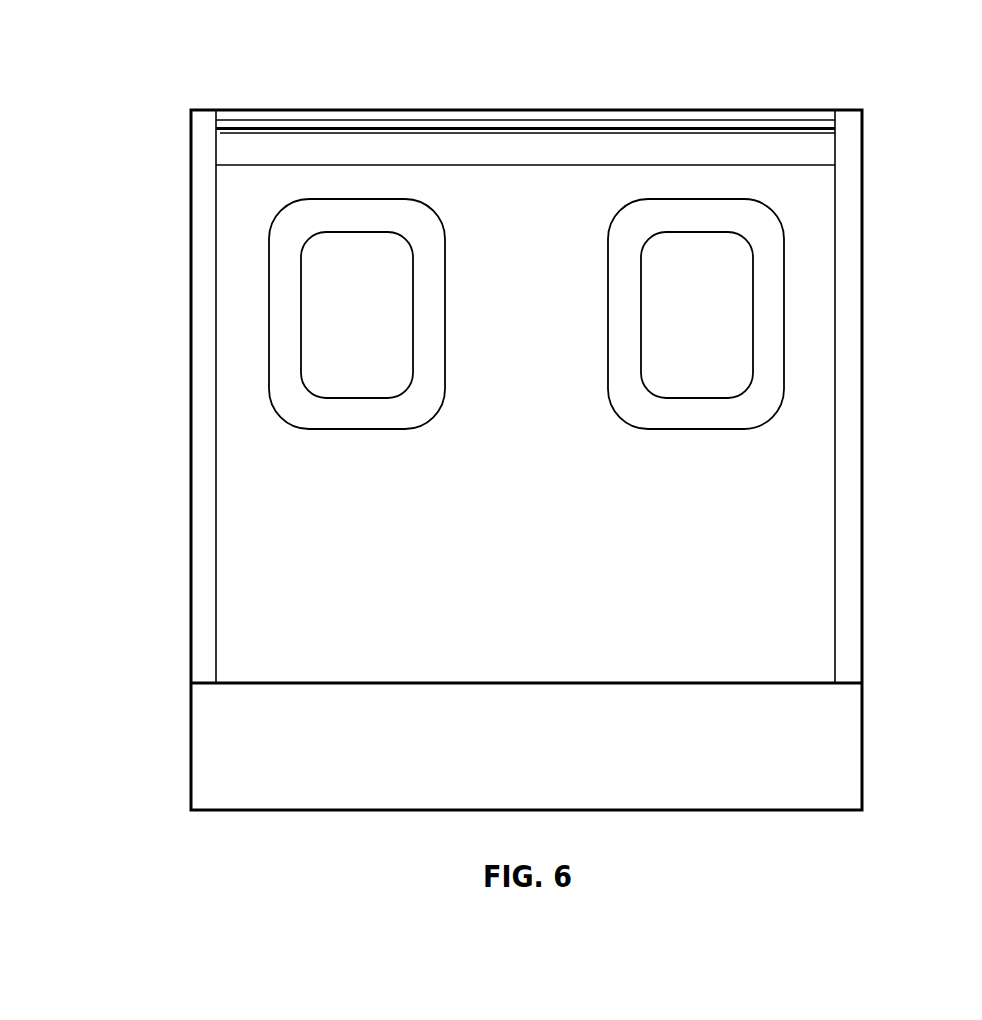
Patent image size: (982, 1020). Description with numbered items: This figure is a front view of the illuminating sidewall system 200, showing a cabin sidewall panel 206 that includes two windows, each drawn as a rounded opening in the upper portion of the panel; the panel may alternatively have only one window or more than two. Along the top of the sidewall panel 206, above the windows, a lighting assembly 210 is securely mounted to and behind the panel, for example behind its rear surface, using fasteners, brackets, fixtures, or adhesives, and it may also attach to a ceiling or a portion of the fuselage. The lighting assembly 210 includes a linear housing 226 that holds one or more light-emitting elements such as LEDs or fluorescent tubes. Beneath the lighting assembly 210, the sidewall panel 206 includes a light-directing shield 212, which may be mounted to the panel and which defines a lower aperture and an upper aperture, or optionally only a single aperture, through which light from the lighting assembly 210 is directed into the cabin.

The illuminating sidewall system 200 is at (222, 76).
The sidewall panel 206 is at (190, 531).
The lighting assembly 210 is at (483, 122).
The light-directing shield 212 is at (820, 162).
The linear housing 226 is at (317, 122).